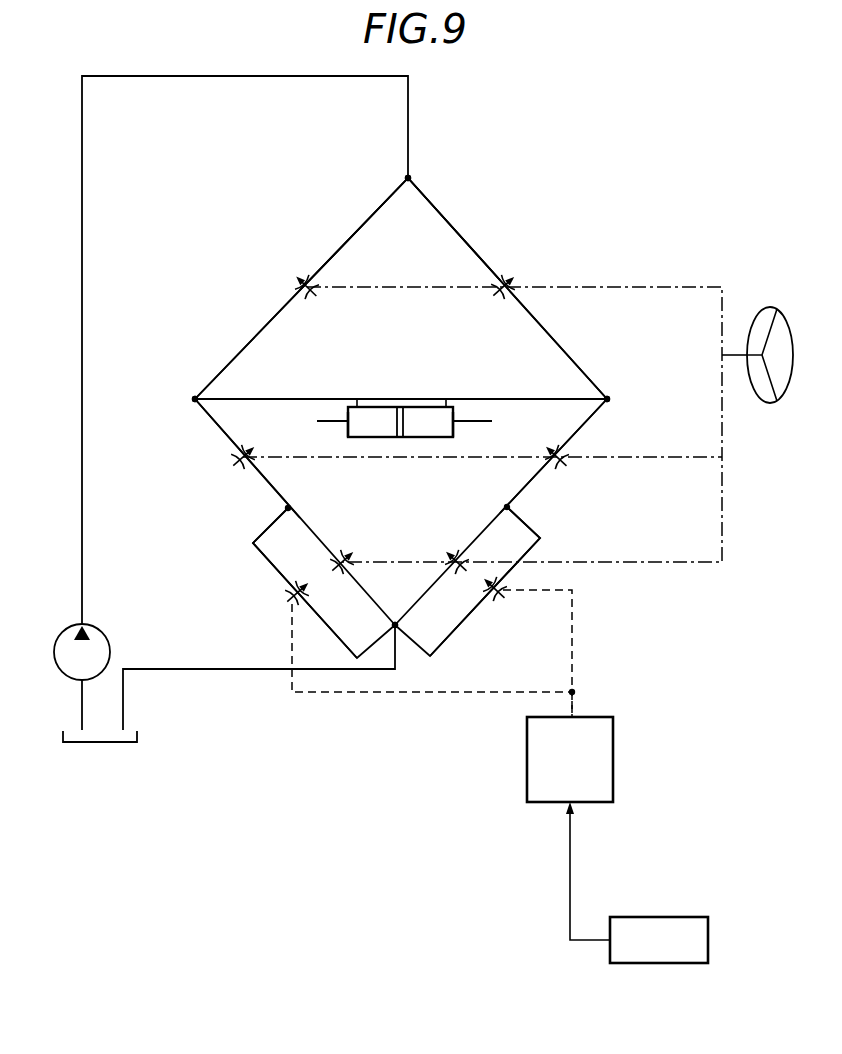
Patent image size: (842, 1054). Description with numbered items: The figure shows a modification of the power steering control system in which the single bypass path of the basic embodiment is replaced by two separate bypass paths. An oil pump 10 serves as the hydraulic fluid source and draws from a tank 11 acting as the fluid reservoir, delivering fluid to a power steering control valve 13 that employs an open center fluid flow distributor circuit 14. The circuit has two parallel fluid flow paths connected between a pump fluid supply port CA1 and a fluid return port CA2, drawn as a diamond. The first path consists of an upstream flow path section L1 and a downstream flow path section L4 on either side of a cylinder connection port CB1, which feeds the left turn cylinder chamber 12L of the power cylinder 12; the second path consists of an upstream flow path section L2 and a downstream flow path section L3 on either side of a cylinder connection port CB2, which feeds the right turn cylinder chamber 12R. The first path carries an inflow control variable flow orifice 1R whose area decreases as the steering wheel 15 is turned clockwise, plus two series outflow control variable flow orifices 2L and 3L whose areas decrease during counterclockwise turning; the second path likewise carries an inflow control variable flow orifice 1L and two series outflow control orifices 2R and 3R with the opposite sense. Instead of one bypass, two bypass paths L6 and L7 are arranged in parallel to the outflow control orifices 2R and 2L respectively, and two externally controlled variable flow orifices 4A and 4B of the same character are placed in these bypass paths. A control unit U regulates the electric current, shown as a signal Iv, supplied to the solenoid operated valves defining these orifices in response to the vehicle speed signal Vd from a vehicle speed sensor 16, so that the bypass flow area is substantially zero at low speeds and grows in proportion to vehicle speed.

The oil pump 10 is at (110, 648).
The tank 11 is at (137, 741).
The power cylinder 12 is at (398, 405).
The left turn cylinder chamber 12L is at (350, 432).
The right turn cylinder chamber 12R is at (452, 432).
The power steering control valve 13 is at (246, 307).
The fluid flow distributor circuit 14 is at (482, 237).
The steering wheel 15 is at (768, 404).
The vehicle speed sensor 16 is at (659, 917).
The inflow control variable flow orifice 1R is at (305, 276).
The inflow control variable flow orifice 1L is at (505, 277).
The outflow control variable flow orifice 2L is at (341, 574).
The outflow control variable flow orifice 2R is at (455, 574).
The outflow control variable flow orifice 3L is at (243, 470).
The outflow control variable flow orifice 3R is at (556, 469).
The externally controlled variable flow orifice 4A is at (494, 604).
The externally controlled variable flow orifice 4B is at (282, 596).
The control unit U is at (614, 762).
The vehicle speed signal Vd is at (588, 871).
The control current Iv is at (586, 690).
The upstream flow path section L1 is at (372, 214).
The upstream flow path section L2 is at (450, 220).
The downstream flow path section L3 is at (588, 420).
The downstream flow path section L4 is at (214, 427).
The bypass path L6 is at (530, 536).
The bypass path L7 is at (258, 540).
The pump fluid supply port CA1 is at (408, 178).
The fluid return port CA2 is at (397, 630).
The cylinder connection port CB1 is at (193, 399).
The cylinder connection port CB2 is at (609, 399).